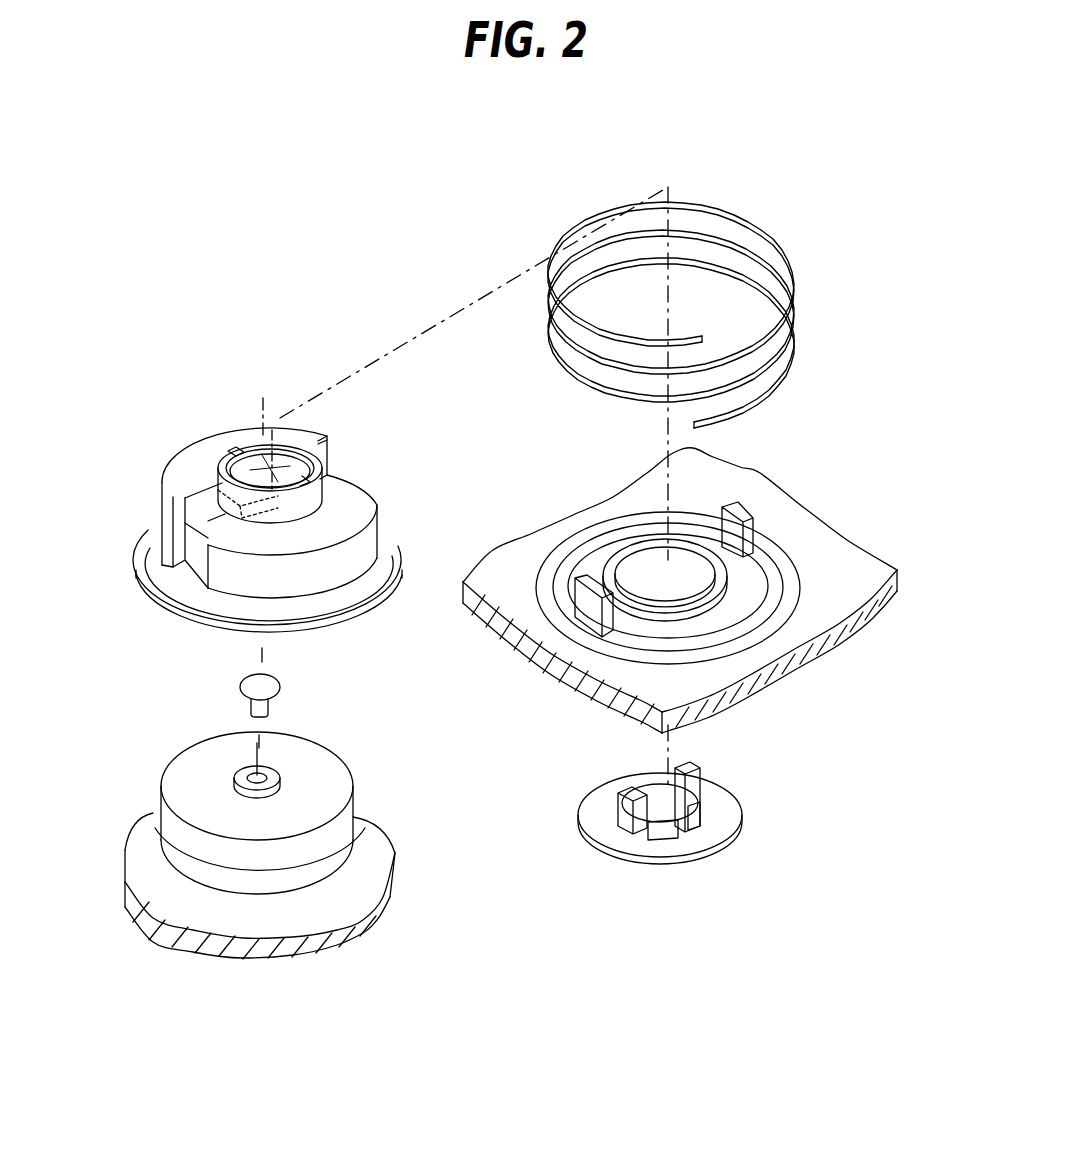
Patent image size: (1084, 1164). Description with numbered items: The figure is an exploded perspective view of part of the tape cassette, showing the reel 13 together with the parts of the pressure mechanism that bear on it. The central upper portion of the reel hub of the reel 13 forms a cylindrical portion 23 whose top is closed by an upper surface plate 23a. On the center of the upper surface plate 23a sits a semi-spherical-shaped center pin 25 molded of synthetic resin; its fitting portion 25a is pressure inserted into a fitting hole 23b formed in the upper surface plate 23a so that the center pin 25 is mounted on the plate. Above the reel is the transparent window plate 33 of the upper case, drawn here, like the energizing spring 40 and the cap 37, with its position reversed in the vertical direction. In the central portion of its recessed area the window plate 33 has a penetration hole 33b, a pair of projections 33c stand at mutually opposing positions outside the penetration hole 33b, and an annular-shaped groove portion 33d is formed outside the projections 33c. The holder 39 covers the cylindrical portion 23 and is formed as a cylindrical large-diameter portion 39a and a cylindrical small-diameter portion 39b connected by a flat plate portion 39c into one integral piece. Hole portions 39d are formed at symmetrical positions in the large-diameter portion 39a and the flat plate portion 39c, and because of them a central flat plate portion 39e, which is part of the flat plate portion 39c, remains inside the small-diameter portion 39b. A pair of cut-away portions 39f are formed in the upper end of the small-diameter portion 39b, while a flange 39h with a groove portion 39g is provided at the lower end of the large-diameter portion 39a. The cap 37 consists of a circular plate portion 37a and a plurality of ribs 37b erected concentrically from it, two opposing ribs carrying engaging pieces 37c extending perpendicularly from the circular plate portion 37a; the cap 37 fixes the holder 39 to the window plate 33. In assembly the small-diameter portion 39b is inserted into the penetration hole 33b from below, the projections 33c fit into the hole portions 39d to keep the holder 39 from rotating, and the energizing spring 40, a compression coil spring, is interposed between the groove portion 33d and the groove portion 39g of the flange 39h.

The reel 13 is at (260, 836).
The cylindrical portion 23 is at (298, 803).
The upper surface plate 23a is at (328, 782).
The fitting hole 23b is at (270, 775).
The center pin 25 is at (259, 697).
The fitting portion 25a is at (272, 710).
The window plate 33 is at (692, 586).
The penetration hole 33b is at (627, 563).
The projections 33c is at (742, 505).
The groove portion 33d is at (780, 570).
The cap 37 is at (673, 821).
The circular plate portion 37a is at (735, 818).
The ribs 37b is at (695, 828).
The engaging pieces 37c is at (692, 768).
The holder 39 is at (262, 538).
The large-diameter portion 39a is at (385, 516).
The small-diameter portion 39b is at (182, 478).
The flat plate portion 39c is at (172, 490).
The hole portions 39d is at (190, 556).
The central flat plate portion 39e is at (268, 445).
The cut-away portions 39f is at (240, 447).
The groove portion 39g is at (150, 541).
The flange 39h is at (400, 566).
The energizing spring 40 is at (752, 222).